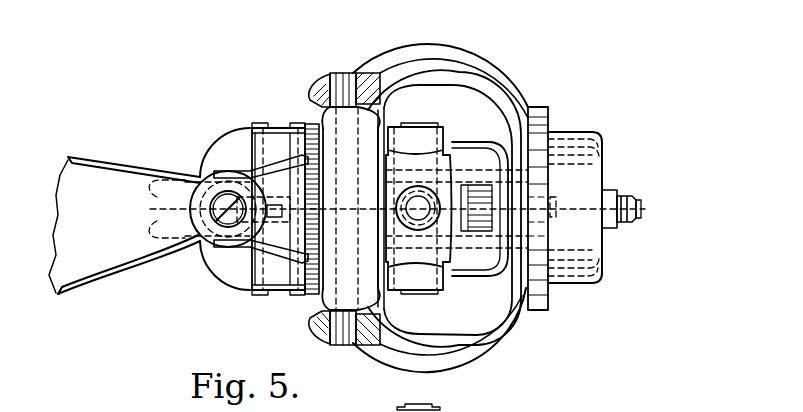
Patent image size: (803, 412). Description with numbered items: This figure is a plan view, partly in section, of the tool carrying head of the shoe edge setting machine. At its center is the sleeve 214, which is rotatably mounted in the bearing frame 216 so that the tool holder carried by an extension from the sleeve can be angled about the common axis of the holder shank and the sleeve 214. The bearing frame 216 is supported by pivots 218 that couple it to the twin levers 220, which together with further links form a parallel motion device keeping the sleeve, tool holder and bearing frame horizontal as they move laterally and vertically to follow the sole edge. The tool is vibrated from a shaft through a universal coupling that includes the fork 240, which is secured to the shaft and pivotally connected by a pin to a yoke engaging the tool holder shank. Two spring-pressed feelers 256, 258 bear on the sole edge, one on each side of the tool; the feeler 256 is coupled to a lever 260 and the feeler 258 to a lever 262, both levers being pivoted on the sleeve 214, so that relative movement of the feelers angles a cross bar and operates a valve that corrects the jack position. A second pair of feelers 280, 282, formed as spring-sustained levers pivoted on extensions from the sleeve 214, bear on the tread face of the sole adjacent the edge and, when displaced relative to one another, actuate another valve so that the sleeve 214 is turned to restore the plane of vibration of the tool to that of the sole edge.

The sleeve 214 is at (535, 107).
The bearing frame 216 is at (508, 342).
The pivots 218 is at (349, 346).
The twin levers 220 is at (336, 316).
The fork 240 is at (442, 132).
The feeler 256 is at (197, 241).
The feeler 258 is at (193, 178).
The lever 260 is at (303, 258).
The lever 262 is at (304, 155).
The feeler 280 is at (192, 243).
The feeler 282 is at (193, 178).